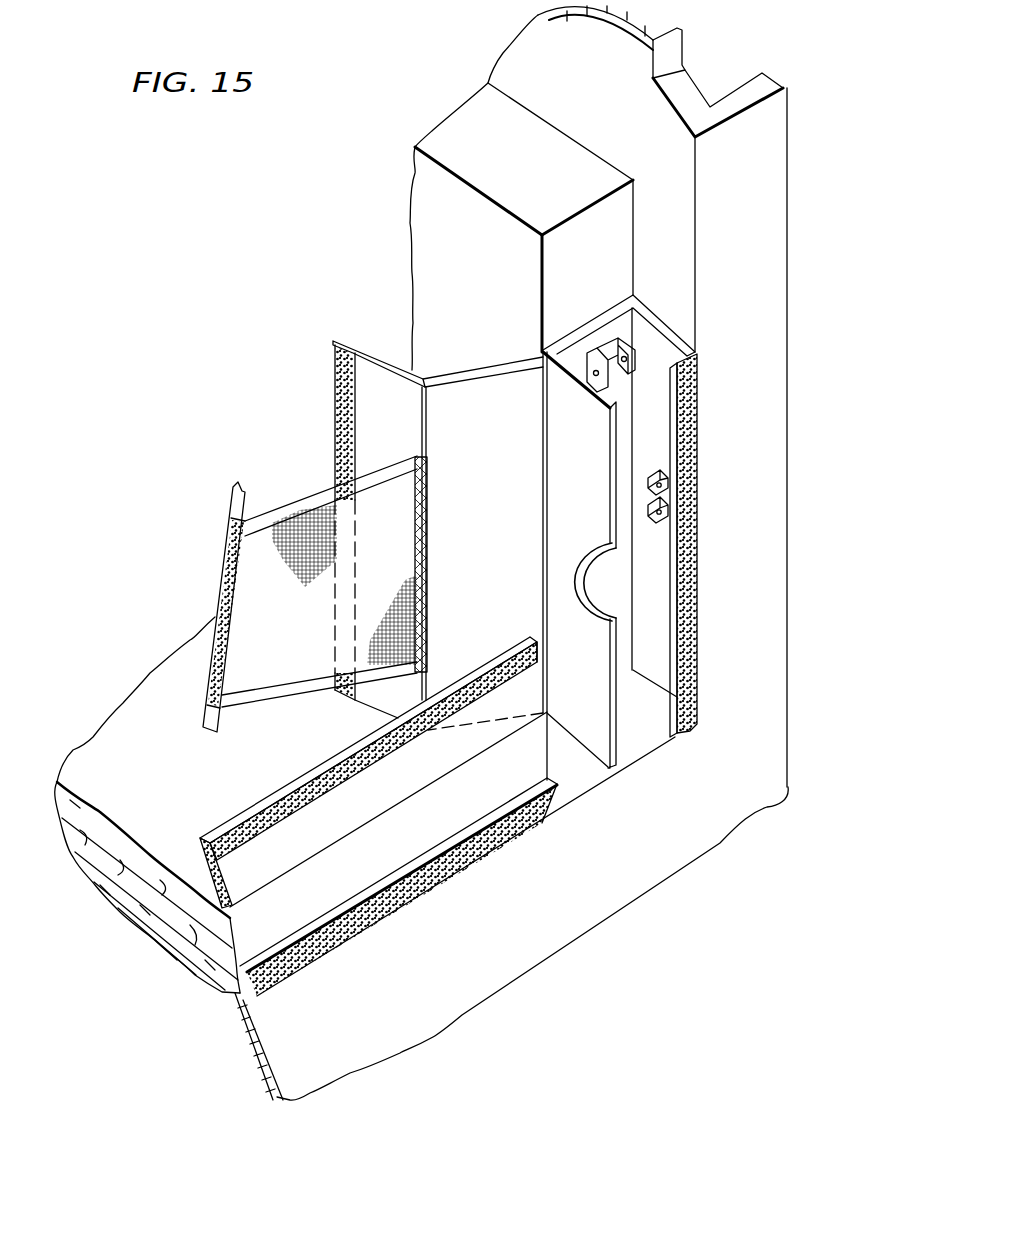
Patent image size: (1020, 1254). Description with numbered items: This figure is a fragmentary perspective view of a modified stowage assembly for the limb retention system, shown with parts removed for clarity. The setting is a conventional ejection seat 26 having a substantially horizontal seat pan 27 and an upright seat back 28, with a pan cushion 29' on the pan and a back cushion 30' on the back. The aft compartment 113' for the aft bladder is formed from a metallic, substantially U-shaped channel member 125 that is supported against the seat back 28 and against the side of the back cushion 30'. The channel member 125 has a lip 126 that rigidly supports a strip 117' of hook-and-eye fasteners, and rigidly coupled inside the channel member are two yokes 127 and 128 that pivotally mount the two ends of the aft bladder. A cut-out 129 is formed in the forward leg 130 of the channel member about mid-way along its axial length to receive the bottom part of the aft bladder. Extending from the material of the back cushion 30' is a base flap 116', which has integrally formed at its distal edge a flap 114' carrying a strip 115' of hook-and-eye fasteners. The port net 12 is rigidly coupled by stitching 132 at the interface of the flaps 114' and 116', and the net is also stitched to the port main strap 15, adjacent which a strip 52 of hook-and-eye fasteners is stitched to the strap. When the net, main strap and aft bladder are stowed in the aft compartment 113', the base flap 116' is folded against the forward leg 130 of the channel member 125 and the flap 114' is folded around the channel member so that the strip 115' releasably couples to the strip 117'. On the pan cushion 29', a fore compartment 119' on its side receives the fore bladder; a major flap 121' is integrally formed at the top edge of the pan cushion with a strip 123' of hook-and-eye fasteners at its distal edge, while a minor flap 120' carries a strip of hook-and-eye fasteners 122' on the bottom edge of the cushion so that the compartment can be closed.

The back cushion 30' is at (489, 364).
The seat back 28 is at (768, 187).
The flap 114' is at (379, 507).
The strip of hook-and-eye fasteners 115' is at (311, 521).
The base flap 116' is at (527, 519).
The yoke 127 is at (604, 344).
The channel member 125 is at (663, 312).
The lip 126 is at (687, 362).
The strip of hook-and-eye fasteners 117' is at (718, 543).
The yoke 128 is at (657, 470).
The cut-out 129 is at (584, 603).
The forward leg 130 is at (593, 532).
The aft compartment 113' is at (691, 581).
The stitching 132 is at (425, 535).
The port net 12 is at (305, 542).
The port main strap 15 is at (228, 507).
The strip of hook-and-eye fasteners 52 is at (228, 565).
The pan cushion 29' is at (169, 858).
The major flap 121' is at (351, 772).
The strip of hook-and-eye fasteners 123' is at (373, 751).
The seat pan 27 is at (455, 907).
The fore compartment 119' is at (400, 875).
The minor flap 120' is at (402, 890).
The strip of hook-and-eye fasteners 122' is at (318, 970).
The ejection seat 26 is at (728, 838).